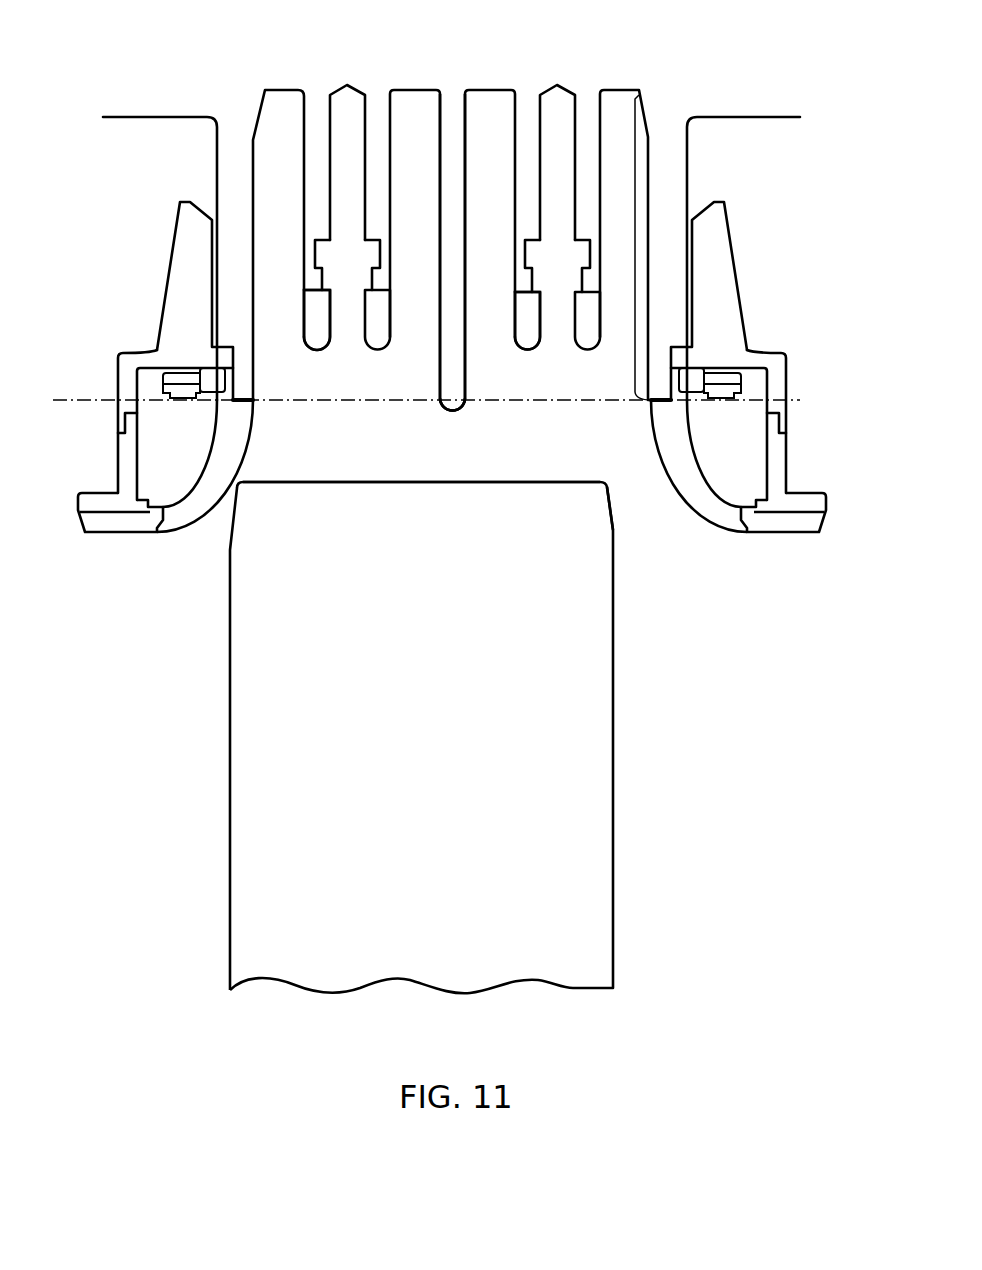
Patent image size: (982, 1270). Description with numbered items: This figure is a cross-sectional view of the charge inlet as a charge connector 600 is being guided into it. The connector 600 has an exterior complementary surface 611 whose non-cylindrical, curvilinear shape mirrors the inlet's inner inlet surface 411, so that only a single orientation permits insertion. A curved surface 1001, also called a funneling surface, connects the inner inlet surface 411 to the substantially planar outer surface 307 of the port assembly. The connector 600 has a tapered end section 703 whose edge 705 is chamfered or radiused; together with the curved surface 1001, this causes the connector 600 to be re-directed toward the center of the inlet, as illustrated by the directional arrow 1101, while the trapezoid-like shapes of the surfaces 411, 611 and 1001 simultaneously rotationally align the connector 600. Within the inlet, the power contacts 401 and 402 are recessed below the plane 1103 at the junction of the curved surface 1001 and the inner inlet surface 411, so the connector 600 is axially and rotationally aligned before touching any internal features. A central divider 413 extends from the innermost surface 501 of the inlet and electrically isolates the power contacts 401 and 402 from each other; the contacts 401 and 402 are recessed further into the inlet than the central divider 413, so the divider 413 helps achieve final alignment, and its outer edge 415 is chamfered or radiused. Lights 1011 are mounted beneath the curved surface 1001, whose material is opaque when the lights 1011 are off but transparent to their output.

The innermost surface 501 is at (500, 96).
The power contact 401 is at (299, 245).
The power contact 402 is at (510, 255).
The central divider 413 is at (447, 356).
The outer edge of central divider 415 is at (449, 410).
The inner inlet surface 411 is at (635, 233).
The plane 1103 is at (800, 401).
The lights 1011 is at (177, 393).
The directional arrow 1101 is at (249, 477).
The edge of tapered section 705 is at (608, 481).
The tapered end section 703 is at (614, 485).
The outer surface of port assembly 307 is at (125, 533).
The curved surface 1001 is at (682, 502).
The complementary surface 611 is at (421, 709).
The connector 600 is at (349, 737).